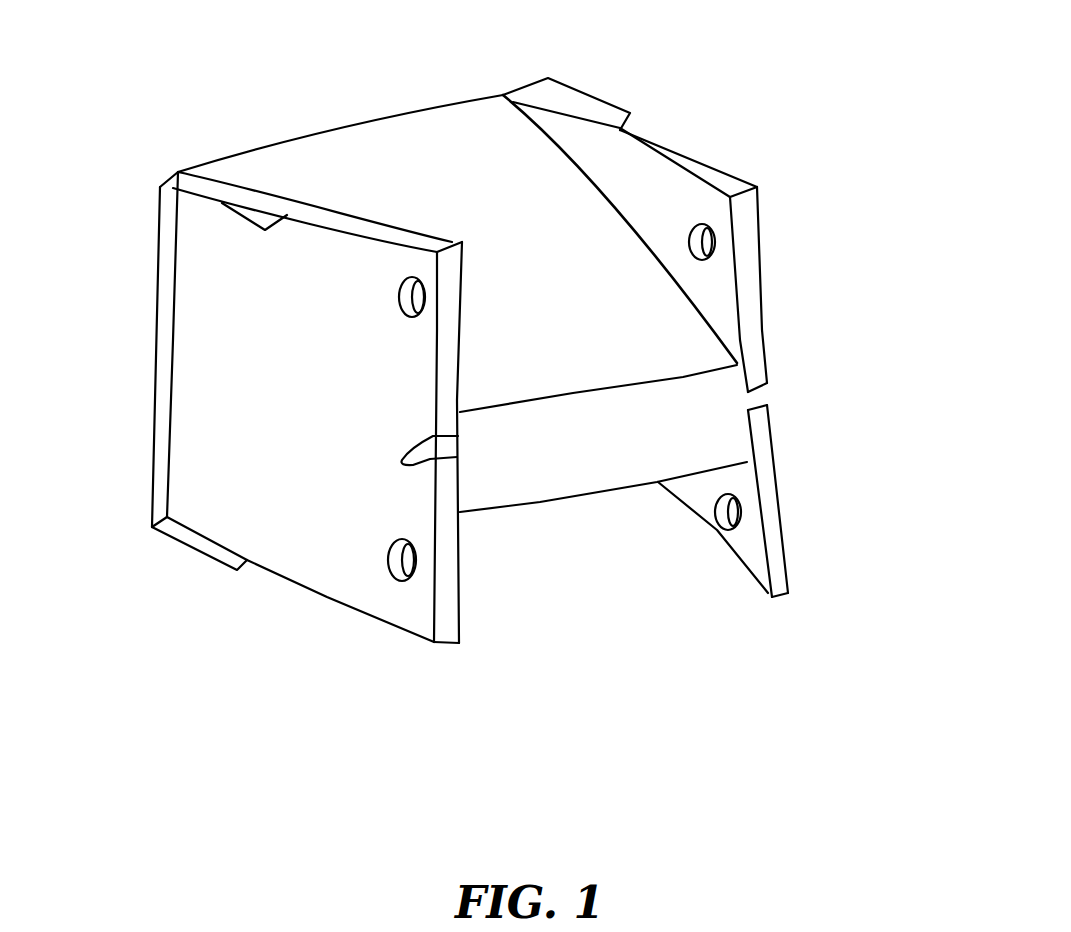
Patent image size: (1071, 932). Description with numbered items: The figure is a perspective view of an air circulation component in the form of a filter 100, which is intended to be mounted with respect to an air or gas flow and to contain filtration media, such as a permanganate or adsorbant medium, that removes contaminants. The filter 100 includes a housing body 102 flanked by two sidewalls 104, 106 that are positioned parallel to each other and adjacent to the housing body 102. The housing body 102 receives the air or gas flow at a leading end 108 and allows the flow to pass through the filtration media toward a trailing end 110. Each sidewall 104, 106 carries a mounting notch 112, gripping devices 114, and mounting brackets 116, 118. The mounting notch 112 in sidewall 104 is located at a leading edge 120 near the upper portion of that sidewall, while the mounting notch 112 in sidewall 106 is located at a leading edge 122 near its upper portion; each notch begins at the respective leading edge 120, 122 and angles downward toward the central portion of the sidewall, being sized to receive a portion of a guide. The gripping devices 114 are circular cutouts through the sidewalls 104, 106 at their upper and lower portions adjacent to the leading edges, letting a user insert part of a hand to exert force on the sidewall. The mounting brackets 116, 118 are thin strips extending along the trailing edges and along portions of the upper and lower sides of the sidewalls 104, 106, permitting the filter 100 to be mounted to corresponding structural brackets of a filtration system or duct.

The filter 100 is at (827, 133).
The housing body 102 is at (443, 130).
The sidewall 104 is at (328, 575).
The sidewall 106 is at (740, 553).
The leading end 108 is at (819, 499).
The trailing end 110 is at (121, 368).
The mounting notch 112 is at (758, 398).
The gripping device 114 is at (404, 280).
The mounting bracket 116 is at (158, 407).
The mounting bracket 118 is at (593, 110).
The leading edge 120 is at (447, 608).
The leading edge 122 is at (777, 570).